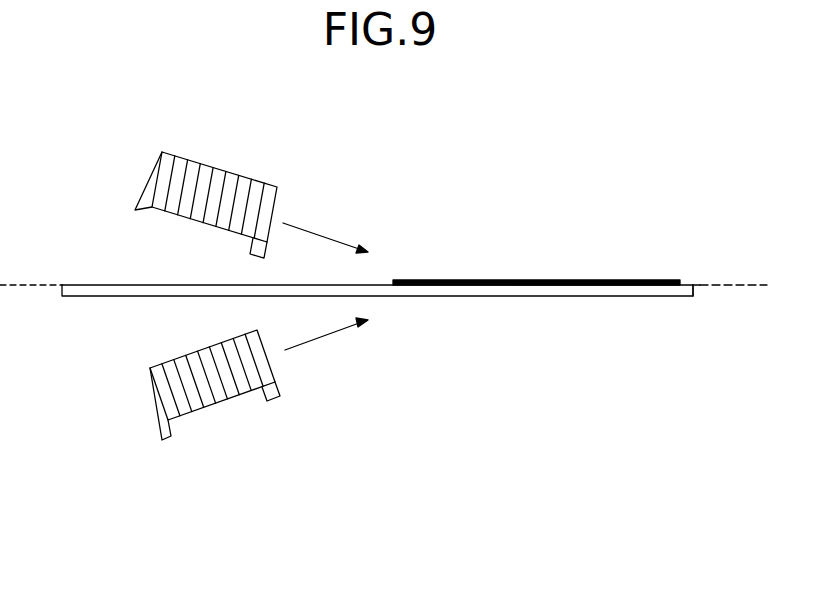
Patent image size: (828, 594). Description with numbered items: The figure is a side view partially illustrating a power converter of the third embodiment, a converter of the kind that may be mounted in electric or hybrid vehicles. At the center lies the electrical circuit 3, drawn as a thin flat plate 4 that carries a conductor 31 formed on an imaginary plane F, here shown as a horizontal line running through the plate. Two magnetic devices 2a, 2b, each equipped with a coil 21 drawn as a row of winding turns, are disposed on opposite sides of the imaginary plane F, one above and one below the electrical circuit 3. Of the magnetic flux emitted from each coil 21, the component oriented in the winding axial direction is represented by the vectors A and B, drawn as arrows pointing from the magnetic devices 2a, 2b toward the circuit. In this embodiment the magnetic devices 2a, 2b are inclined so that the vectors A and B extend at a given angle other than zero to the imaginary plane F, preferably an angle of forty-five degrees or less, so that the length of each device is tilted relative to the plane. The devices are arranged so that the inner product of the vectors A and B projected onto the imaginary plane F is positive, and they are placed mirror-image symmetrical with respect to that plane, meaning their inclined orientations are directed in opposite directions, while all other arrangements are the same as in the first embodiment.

The magnetic device 2a is at (248, 178).
The magnetic device 2b is at (197, 417).
The coil 21 is at (188, 168).
The electrical circuit 3 is at (392, 265).
The conductor 31 is at (598, 281).
The plate 4 is at (462, 291).
The vector A is at (325, 235).
The vector B is at (326, 336).
The imaginary plane F is at (713, 287).